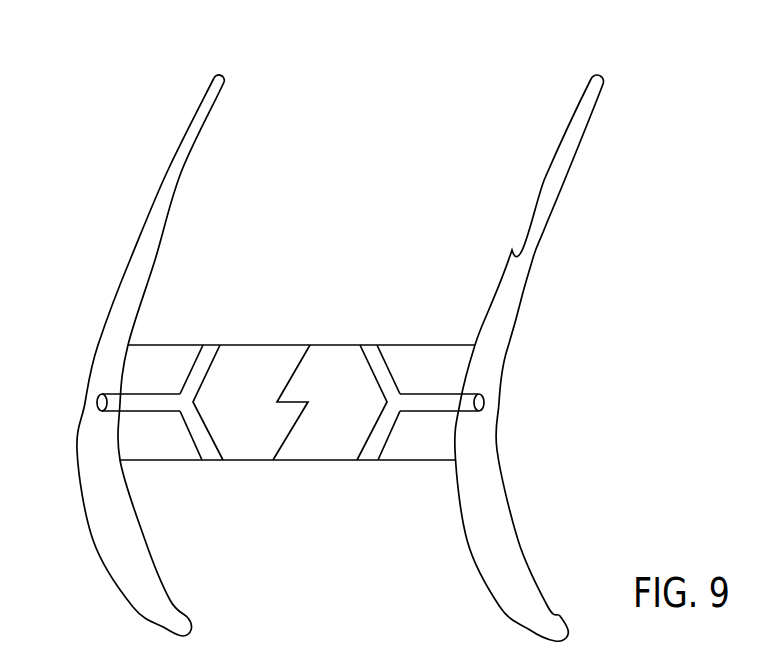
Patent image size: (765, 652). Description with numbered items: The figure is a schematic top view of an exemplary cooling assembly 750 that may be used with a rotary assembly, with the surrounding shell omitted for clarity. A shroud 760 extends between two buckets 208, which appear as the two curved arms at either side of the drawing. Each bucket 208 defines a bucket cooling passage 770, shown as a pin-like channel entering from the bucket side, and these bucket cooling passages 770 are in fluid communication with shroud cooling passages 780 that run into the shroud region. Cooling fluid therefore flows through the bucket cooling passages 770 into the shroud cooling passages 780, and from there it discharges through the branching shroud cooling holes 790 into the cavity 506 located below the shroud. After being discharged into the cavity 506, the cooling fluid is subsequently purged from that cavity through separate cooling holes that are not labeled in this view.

The cooling assembly 750 is at (618, 45).
The bucket 208 is at (175, 180).
The cavity 506 is at (297, 552).
The shroud 760 is at (308, 357).
The shroud cooling passage 780 is at (158, 400).
The shroud cooling hole 790 is at (216, 345).
The bucket cooling passage 770 is at (97, 402).